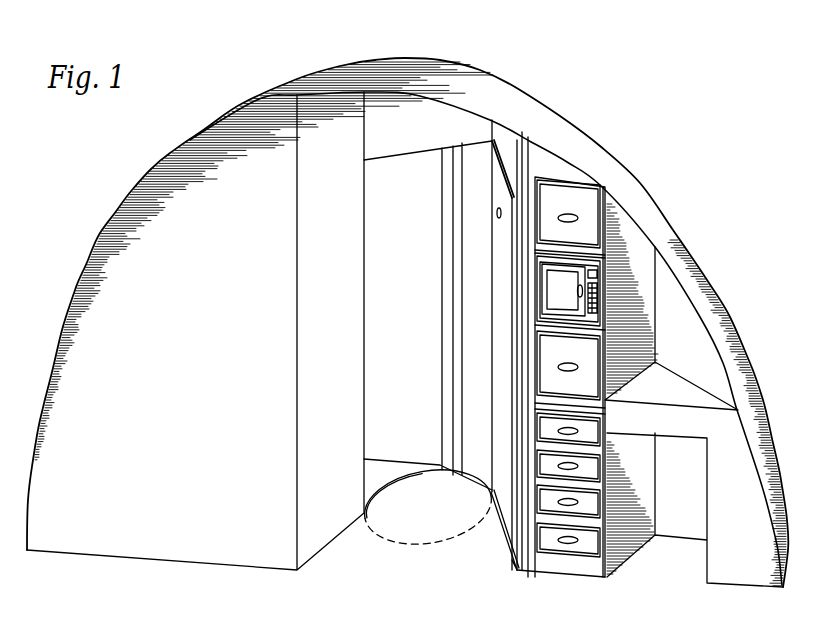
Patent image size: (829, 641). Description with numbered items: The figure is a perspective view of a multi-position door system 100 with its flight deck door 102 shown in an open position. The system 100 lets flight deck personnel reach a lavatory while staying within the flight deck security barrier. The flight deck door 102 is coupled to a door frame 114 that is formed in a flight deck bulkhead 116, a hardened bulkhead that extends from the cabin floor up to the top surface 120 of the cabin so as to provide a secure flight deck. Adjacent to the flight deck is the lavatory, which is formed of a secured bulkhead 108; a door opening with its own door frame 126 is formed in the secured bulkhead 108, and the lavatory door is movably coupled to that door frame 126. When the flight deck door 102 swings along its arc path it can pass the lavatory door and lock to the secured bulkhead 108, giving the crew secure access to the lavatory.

The multi-position door system 100 is at (716, 172).
The flight deck door 102 is at (503, 513).
The secured bulkhead 108 is at (185, 490).
The door frame 114 is at (503, 172).
The flight deck bulkhead 116 is at (506, 138).
The top surface 120 is at (452, 88).
The door frame 126 is at (441, 463).